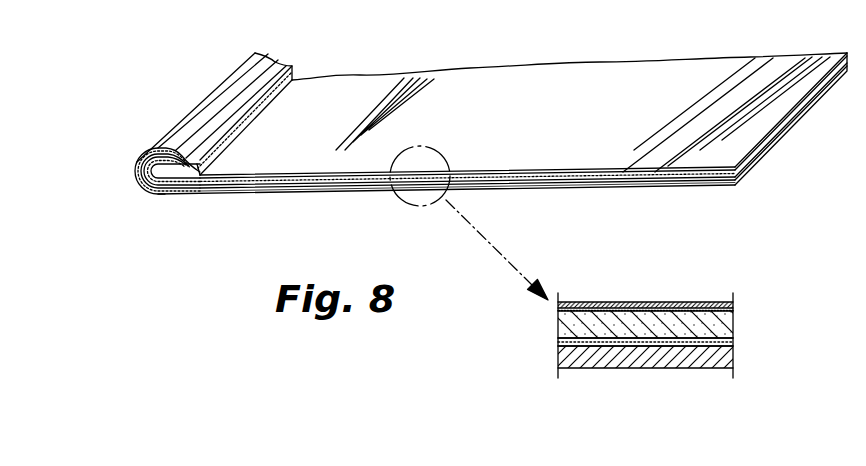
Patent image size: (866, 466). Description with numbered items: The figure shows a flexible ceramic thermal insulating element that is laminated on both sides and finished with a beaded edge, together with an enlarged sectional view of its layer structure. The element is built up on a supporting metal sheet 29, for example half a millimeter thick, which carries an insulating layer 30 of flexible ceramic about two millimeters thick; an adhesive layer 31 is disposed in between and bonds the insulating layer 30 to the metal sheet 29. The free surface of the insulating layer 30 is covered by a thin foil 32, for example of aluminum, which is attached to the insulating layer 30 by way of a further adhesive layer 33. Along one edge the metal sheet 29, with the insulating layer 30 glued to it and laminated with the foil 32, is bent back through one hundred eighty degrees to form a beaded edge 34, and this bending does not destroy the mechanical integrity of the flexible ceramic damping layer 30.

The supporting metal sheet 29 is at (583, 187).
The insulating layer 30 is at (700, 181).
The adhesive layer 31 is at (647, 183).
The thin foil 32 is at (597, 84).
The adhesive layer 33 is at (611, 171).
The beaded edge 34 is at (185, 123).